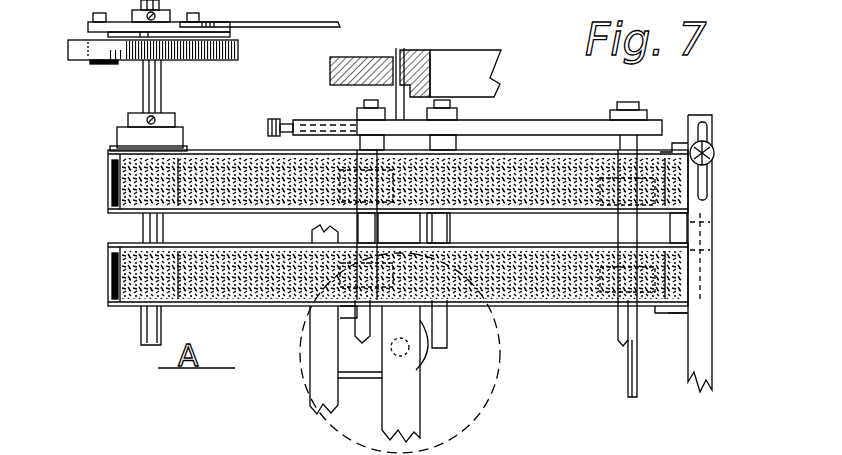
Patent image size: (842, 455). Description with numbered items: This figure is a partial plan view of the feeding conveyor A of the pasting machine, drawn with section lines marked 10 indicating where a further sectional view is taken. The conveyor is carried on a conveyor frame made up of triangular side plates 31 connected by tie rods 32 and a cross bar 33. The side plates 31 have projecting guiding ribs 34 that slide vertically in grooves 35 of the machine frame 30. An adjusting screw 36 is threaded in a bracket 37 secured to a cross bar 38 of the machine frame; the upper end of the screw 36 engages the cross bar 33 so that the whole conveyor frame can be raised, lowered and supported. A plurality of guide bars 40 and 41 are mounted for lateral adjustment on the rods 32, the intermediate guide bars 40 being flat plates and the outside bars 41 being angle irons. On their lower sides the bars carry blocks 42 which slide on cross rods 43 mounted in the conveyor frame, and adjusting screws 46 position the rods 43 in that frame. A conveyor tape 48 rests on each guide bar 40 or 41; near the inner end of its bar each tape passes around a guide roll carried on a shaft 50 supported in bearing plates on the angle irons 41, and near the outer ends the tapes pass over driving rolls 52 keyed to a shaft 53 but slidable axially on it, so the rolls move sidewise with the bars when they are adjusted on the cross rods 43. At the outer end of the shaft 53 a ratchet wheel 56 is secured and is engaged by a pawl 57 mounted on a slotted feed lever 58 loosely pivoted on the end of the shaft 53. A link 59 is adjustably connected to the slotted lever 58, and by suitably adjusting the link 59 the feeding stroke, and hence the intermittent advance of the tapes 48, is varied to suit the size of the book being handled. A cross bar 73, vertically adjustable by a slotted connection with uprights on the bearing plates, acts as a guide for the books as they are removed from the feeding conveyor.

The section line 10- 10 is at (52, 76).
The frame 30 is at (498, 85).
The triangular side plates 31 is at (512, 130).
The tie rods 32 is at (449, 333).
The cross bar 33 is at (418, 410).
The guiding ribs 34 is at (396, 57).
The grooves 35 is at (432, 80).
The adjusting screw 36 is at (412, 355).
The bracket 37 is at (372, 378).
The cross bar 38 is at (312, 400).
The intermediate guide bars 40 is at (215, 299).
The outside guide bars 41 is at (203, 153).
The blocks 42 is at (393, 212).
The cross rods 43 is at (360, 344).
The adjusting screws 46 is at (271, 130).
The conveyor tape 48 is at (227, 258).
The shaft 50 is at (686, 332).
The driving rolls 52 is at (117, 238).
The shaft 53 is at (143, 82).
The ratchet wheel 56 is at (201, 62).
The pawl 57 is at (90, 35).
The slotted feed lever 58 is at (118, 32).
The link 59 is at (289, 25).
The cross bar 73 is at (708, 352).